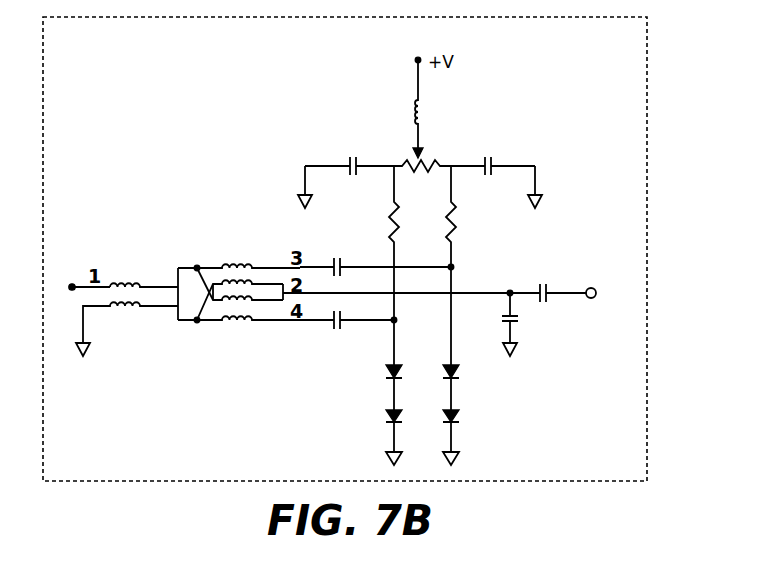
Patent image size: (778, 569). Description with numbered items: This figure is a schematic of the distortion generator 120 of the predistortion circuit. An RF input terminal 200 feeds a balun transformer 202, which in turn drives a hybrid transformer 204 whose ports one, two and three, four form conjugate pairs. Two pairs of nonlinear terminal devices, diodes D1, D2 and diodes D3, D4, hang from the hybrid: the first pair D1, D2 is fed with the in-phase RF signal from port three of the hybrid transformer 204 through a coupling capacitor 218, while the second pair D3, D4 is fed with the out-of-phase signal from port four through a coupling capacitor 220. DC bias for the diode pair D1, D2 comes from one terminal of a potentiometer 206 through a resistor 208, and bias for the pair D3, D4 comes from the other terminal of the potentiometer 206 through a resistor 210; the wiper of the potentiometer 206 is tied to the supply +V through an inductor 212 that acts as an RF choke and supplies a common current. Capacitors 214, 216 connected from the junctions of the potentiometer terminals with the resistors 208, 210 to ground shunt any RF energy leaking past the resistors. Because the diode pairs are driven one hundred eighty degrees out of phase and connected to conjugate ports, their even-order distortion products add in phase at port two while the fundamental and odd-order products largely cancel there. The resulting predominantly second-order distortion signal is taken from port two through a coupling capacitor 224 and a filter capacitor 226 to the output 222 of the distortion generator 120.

The distortion generator 120 is at (648, 97).
The input terminal 200 is at (72, 284).
The balun transformer 202 is at (128, 309).
The hybrid transformer 204 is at (240, 322).
The potentiometer 206 is at (436, 166).
The resistor 208 is at (391, 206).
The resistor 210 is at (456, 210).
The inductor 212 is at (422, 118).
The capacitor 214 is at (348, 163).
The capacitor 216 is at (492, 161).
The coupling capacitor 218 is at (341, 264).
The coupling capacitor 220 is at (336, 325).
The output 222 is at (598, 291).
The coupling capacitor 224 is at (539, 288).
The filter capacitor 226 is at (519, 320).
The diode D1 is at (399, 372).
The diode D2 is at (399, 416).
The diode D3 is at (456, 372).
The diode D4 is at (456, 416).